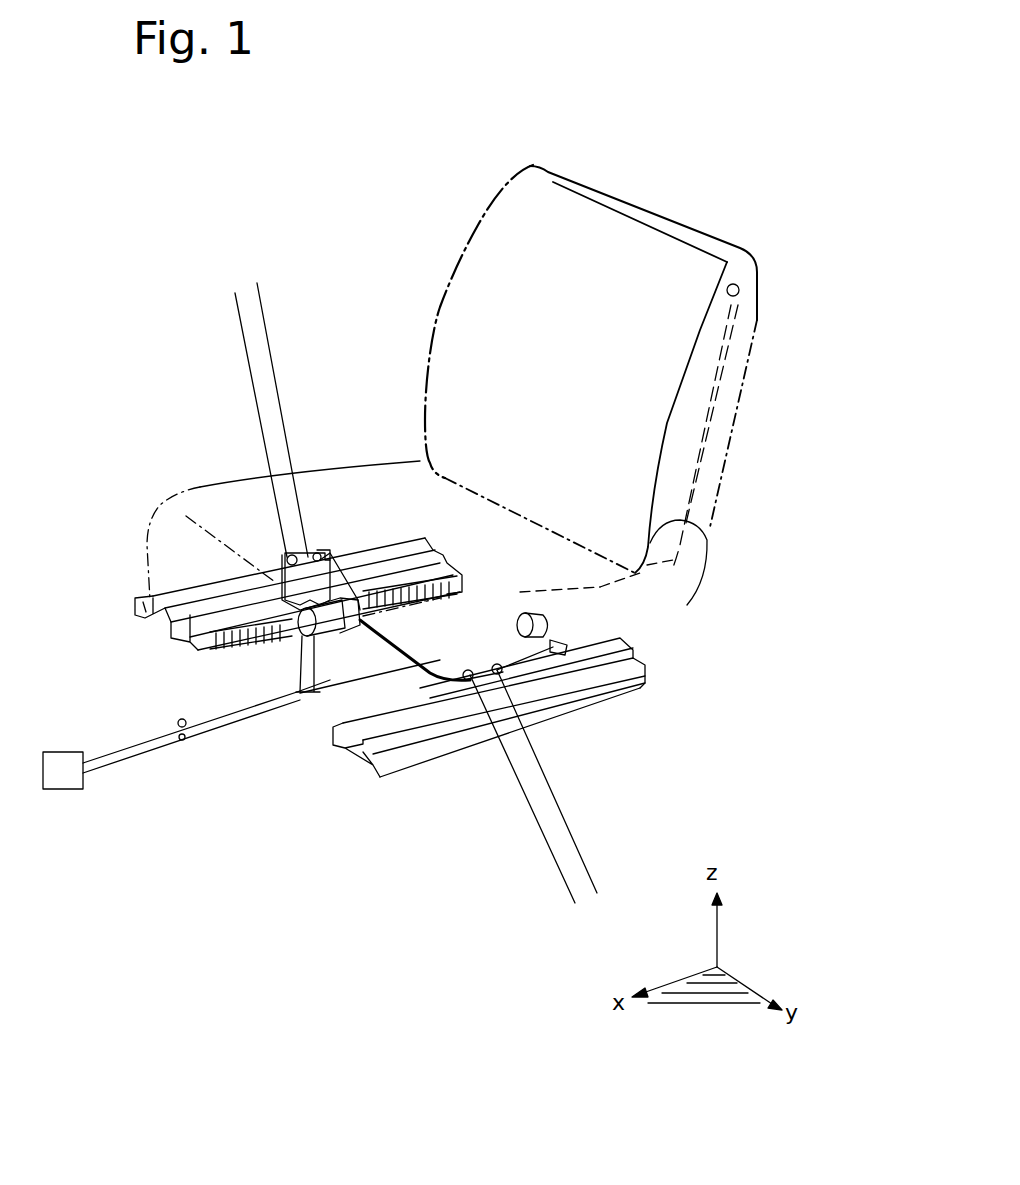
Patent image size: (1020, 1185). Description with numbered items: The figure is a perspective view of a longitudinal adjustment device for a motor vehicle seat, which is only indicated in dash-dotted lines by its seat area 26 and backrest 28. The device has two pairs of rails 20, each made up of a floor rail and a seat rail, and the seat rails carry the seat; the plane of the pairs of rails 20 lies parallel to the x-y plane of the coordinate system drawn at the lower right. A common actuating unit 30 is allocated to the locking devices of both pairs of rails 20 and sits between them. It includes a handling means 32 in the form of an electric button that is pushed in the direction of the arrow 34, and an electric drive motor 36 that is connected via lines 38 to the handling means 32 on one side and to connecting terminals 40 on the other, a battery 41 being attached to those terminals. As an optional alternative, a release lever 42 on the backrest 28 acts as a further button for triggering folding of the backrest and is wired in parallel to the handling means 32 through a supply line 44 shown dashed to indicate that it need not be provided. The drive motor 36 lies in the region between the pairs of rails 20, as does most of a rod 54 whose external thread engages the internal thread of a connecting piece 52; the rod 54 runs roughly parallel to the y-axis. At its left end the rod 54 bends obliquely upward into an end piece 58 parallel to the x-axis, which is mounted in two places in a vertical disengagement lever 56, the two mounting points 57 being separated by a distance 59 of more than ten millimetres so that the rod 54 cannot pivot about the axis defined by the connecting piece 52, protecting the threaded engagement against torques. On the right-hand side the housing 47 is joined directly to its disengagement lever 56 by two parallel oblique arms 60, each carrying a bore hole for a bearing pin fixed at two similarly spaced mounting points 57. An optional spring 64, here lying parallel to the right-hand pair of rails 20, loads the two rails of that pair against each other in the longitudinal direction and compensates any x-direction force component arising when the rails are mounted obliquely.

The pair of rails 20 is at (165, 620).
The seat area 26 is at (401, 478).
The backrest 28 is at (607, 247).
The actuating unit 30 is at (277, 662).
The handling means 32 is at (545, 627).
The arrow 34 is at (547, 650).
The electric drive motor 36 is at (285, 597).
The lines 38 is at (246, 718).
The connecting terminals 40 is at (178, 742).
The battery 41 is at (48, 790).
The release lever 42 is at (740, 290).
The supply line 44 is at (723, 360).
The housing 47 is at (363, 530).
The connecting piece 52 is at (337, 645).
The rod 54 is at (427, 625).
The disengagement lever 56 is at (262, 568).
The mounting points 57 is at (317, 557).
The end piece 58 is at (470, 672).
The distance 59 is at (288, 288).
The oblique arms 60 is at (320, 557).
The spring 64 is at (205, 652).